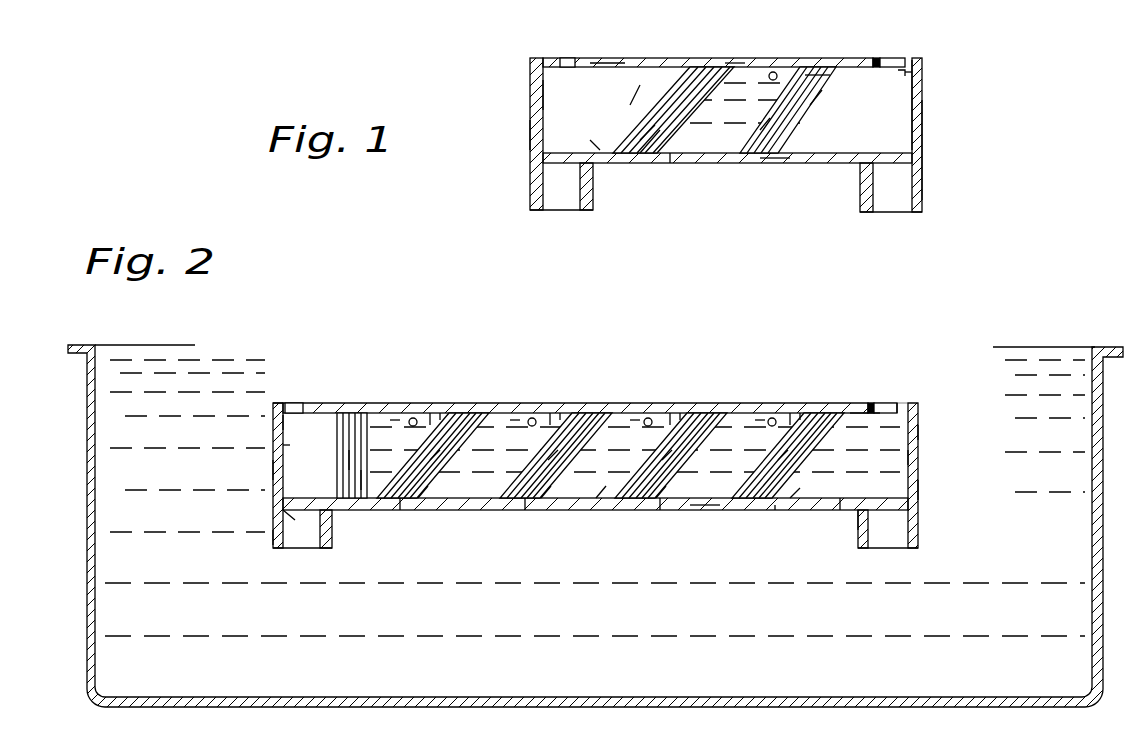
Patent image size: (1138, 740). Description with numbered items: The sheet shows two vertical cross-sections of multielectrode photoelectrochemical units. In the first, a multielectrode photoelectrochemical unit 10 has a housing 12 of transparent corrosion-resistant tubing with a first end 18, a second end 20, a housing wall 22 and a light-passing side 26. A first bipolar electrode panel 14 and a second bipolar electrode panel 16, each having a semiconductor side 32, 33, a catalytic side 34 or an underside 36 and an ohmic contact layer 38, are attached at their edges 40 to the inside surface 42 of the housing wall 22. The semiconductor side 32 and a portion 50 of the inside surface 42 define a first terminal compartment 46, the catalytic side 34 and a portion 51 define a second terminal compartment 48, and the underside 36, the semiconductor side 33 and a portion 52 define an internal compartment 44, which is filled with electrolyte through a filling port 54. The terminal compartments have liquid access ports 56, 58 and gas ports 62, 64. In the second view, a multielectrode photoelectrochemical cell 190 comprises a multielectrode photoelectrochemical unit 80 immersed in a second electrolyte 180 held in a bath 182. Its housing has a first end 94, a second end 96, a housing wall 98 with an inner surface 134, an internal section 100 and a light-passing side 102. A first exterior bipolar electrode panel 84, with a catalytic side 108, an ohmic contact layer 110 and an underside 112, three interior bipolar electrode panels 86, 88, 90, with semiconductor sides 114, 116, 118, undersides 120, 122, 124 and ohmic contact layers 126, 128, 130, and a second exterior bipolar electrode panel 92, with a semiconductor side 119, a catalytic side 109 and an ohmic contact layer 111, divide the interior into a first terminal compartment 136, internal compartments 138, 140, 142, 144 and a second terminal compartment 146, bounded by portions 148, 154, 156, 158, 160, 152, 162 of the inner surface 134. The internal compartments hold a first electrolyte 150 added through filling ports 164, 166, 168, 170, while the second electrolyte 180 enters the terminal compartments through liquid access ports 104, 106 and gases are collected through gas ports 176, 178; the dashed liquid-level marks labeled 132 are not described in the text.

In FIG. 1, the multielectrode photoelectrochemical unit 10 is at (515, 72).
In FIG. 1, the housing 12 is at (652, 62).
In FIG. 1, the first bipolar electrode panel 14 is at (732, 58).
In FIG. 1, the second bipolar electrode panel 16 is at (878, 58).
In FIG. 1, the first end 18 is at (530, 128).
In FIG. 1, the second end 20 is at (922, 118).
In FIG. 1, the housing wall 22 is at (610, 60).
In FIG. 1, the light-passing side 26 is at (815, 65).
In FIG. 1, the semiconductor side 32 is at (640, 121).
In FIG. 1, the semiconductor side 33 is at (745, 140).
In FIG. 1, the catalytic side 34 is at (810, 105).
In FIG. 1, the underside 36 is at (655, 160).
In FIG. 1, the ohmic contact layer 38 is at (778, 125).
In FIG. 1, the edges 40 is at (710, 62).
In FIG. 1, the inside surface 42 is at (598, 150).
In FIG. 1, the internal compartment 44 is at (688, 160).
In FIG. 1, the first terminal compartment 46 is at (560, 85).
In FIG. 1, the second terminal compartment 48 is at (918, 100).
In FIG. 1, the portion of the inside surface 50 is at (635, 70).
In FIG. 1, the portion of the inside surface 51 is at (908, 72).
In FIG. 1, the portion of the inside surface 52 is at (800, 92).
In FIG. 1, the filling port 54 is at (775, 70).
In FIG. 1, the liquid access port 56 is at (548, 200).
In FIG. 1, the liquid access port 58 is at (908, 200).
In FIG. 2, the liquid access port 58 is at (710, 512).
In FIG. 1, the gas port 62 is at (570, 60).
In FIG. 1, the gas port 64 is at (895, 60).
In FIG. 2, the multielectrode photoelectrochemical unit 80 is at (277, 362).
In FIG. 2, the first exterior bipolar electrode panel 84 is at (360, 412).
In FIG. 2, the first interior bipolar electrode panel 86 is at (488, 412).
In FIG. 2, the second interior bipolar electrode panel 88 is at (612, 412).
In FIG. 2, the third interior bipolar electrode panel 90 is at (732, 412).
In FIG. 2, the second exterior bipolar electrode panel 92 is at (858, 412).
In FIG. 2, the first end 94 is at (273, 472).
In FIG. 2, the second end 96 is at (918, 490).
In FIG. 2, the housing wall 98 is at (915, 400).
In FIG. 2, the internal section 100 is at (608, 485).
In FIG. 2, the light-passing side 102 is at (275, 400).
In FIG. 2, the first liquid access port 104 is at (310, 535).
In FIG. 2, the second liquid access port 106 is at (903, 535).
In FIG. 2, the catalytic side 108 is at (337, 435).
In FIG. 2, the catalytic side 109 is at (788, 478).
In FIG. 2, the ohmic contact layer 110 is at (352, 458).
In FIG. 2, the ohmic contact layer 111 is at (780, 512).
In FIG. 2, the underside 112 is at (362, 474).
In FIG. 2, the semiconductor side 114 is at (430, 460).
In FIG. 2, the semiconductor side 116 is at (548, 460).
In FIG. 2, the semiconductor side 118 is at (662, 460).
In FIG. 2, the semiconductor side 119 is at (778, 460).
In FIG. 2, the underside 120 is at (424, 486).
In FIG. 2, the underside 122 is at (541, 486).
In FIG. 2, the underside 124 is at (660, 486).
In FIG. 2, the ohmic contact layer 126 is at (415, 512).
In FIG. 2, the ohmic contact layer 128 is at (530, 512).
In FIG. 2, the ohmic contact layer 130 is at (662, 512).
In FIG. 2, the electrolyte 132 is at (340, 412).
In FIG. 2, the inner surface 134 is at (285, 512).
In FIG. 2, the first terminal compartment 136 is at (290, 448).
In FIG. 2, the first internal compartment 138 is at (392, 412).
In FIG. 2, the second internal compartment 140 is at (518, 412).
In FIG. 2, the third internal compartment 142 is at (638, 412).
In FIG. 2, the fourth internal compartment 144 is at (760, 412).
In FIG. 2, the second terminal compartment 146 is at (918, 460).
In FIG. 2, the portion of the inner surface 148 is at (283, 425).
In FIG. 2, the first electrolyte 150 is at (414, 445).
In FIG. 2, the portion of the inner surface 152 is at (275, 535).
In FIG. 2, the portion of the inner surface 154 is at (440, 412).
In FIG. 2, the portion of the inner surface 156 is at (568, 412).
In FIG. 2, the portion of the inner surface 158 is at (688, 412).
In FIG. 2, the portion of the inner surface 160 is at (810, 412).
In FIG. 2, the portion of the inner surface 162 is at (845, 505).
In FIG. 2, the filling port 164 is at (420, 412).
In FIG. 2, the filling port 166 is at (542, 412).
In FIG. 2, the filling port 168 is at (662, 412).
In FIG. 2, the filling port 170 is at (784, 412).
In FIG. 2, the gas port 176 is at (308, 400).
In FIG. 2, the gas port 178 is at (898, 400).
In FIG. 2, the second electrolyte 180 is at (1058, 358).
In FIG. 2, the bath 182 is at (88, 430).
In FIG. 2, the multielectrode photoelectrochemical cell 190 is at (357, 290).